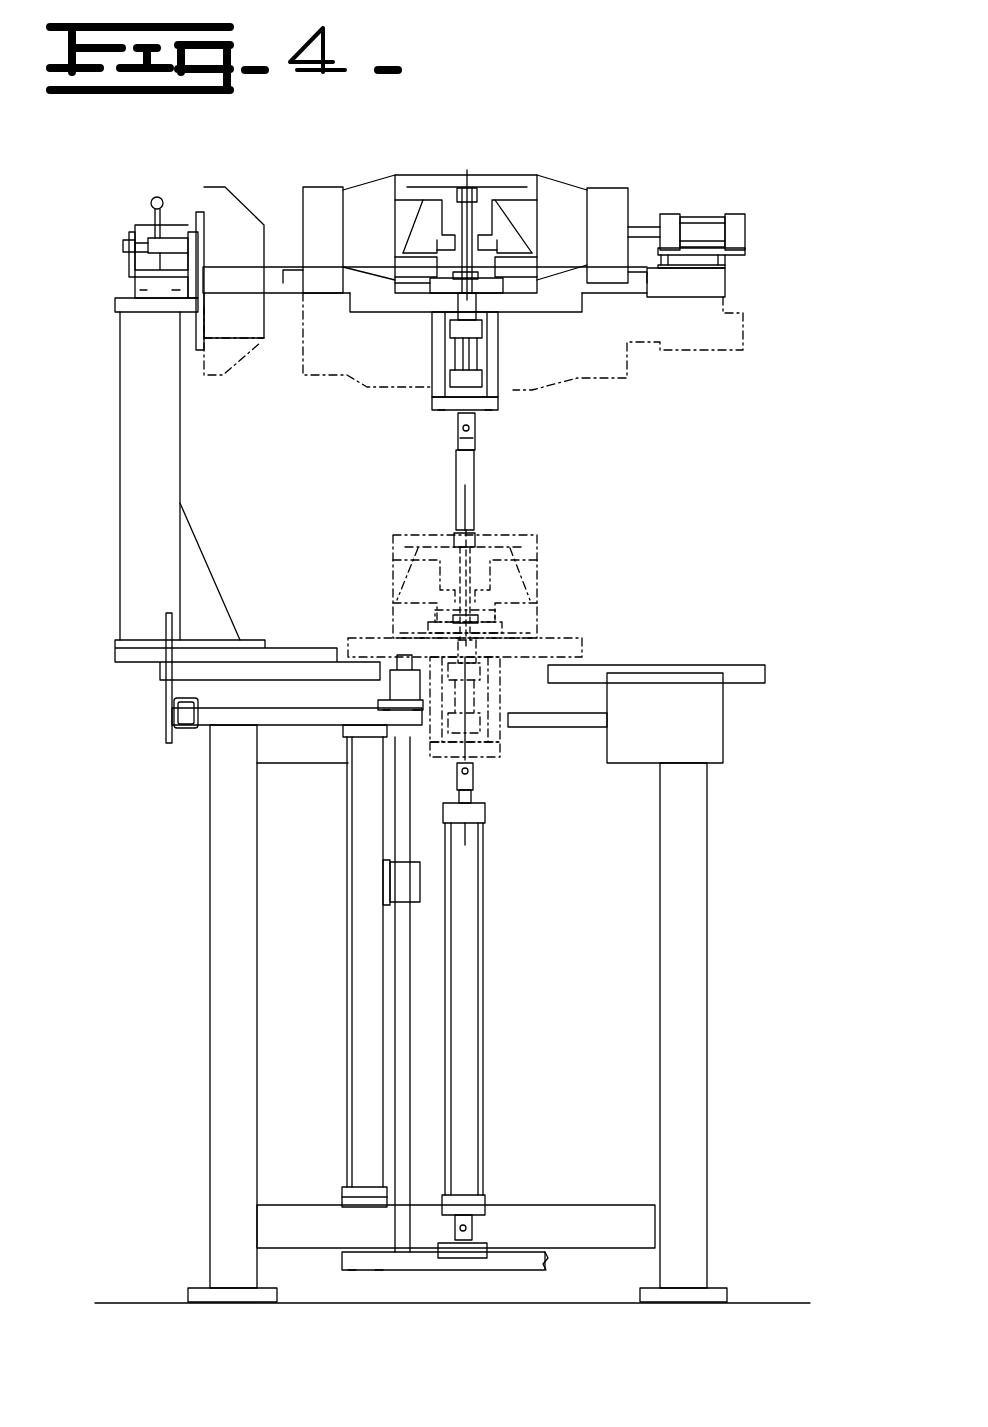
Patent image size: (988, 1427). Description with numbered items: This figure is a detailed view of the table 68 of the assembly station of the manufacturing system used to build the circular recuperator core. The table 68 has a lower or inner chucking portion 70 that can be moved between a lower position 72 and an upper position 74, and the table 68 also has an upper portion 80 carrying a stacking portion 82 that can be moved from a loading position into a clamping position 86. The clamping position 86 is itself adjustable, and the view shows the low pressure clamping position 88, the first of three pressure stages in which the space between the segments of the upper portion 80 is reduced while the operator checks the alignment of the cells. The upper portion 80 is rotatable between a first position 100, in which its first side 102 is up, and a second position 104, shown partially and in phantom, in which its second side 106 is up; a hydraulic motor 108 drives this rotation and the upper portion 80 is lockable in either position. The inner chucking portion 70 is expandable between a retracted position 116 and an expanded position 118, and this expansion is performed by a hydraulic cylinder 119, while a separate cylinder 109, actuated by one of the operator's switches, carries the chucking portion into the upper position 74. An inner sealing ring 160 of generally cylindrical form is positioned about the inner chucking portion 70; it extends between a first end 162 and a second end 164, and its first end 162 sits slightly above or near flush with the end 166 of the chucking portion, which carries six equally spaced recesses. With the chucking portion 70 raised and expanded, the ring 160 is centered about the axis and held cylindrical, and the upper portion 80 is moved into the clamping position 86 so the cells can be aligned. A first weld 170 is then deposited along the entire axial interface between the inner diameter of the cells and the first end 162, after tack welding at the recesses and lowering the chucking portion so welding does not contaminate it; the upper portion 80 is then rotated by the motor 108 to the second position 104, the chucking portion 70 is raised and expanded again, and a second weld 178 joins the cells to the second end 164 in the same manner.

The table 68 is at (167, 690).
The lower or inner chucking portion 70 is at (532, 312).
The lower position 72 is at (638, 623).
The upper position 74 is at (645, 375).
The upper portion 80 is at (725, 278).
The stacking portion 82 is at (628, 195).
The clamping position 86 is at (551, 170).
The low pressure clamping position 88 is at (303, 187).
The first position 100 is at (727, 183).
The first side 102 is at (210, 187).
The second position 104 is at (104, 412).
The second side 106 is at (705, 297).
The hydraulic motor 108 is at (148, 224).
The cylinder 109 is at (485, 943).
The retracted position 116 is at (560, 550).
The expanded position 118 is at (509, 185).
The hydraulic cylinder 119 is at (483, 357).
The inner sealing ring 160 is at (540, 200).
The first end 162 is at (533, 187).
The second end 164 is at (567, 300).
The end 166 is at (412, 200).
The first weld 170 is at (395, 190).
The second weld 178 is at (392, 293).